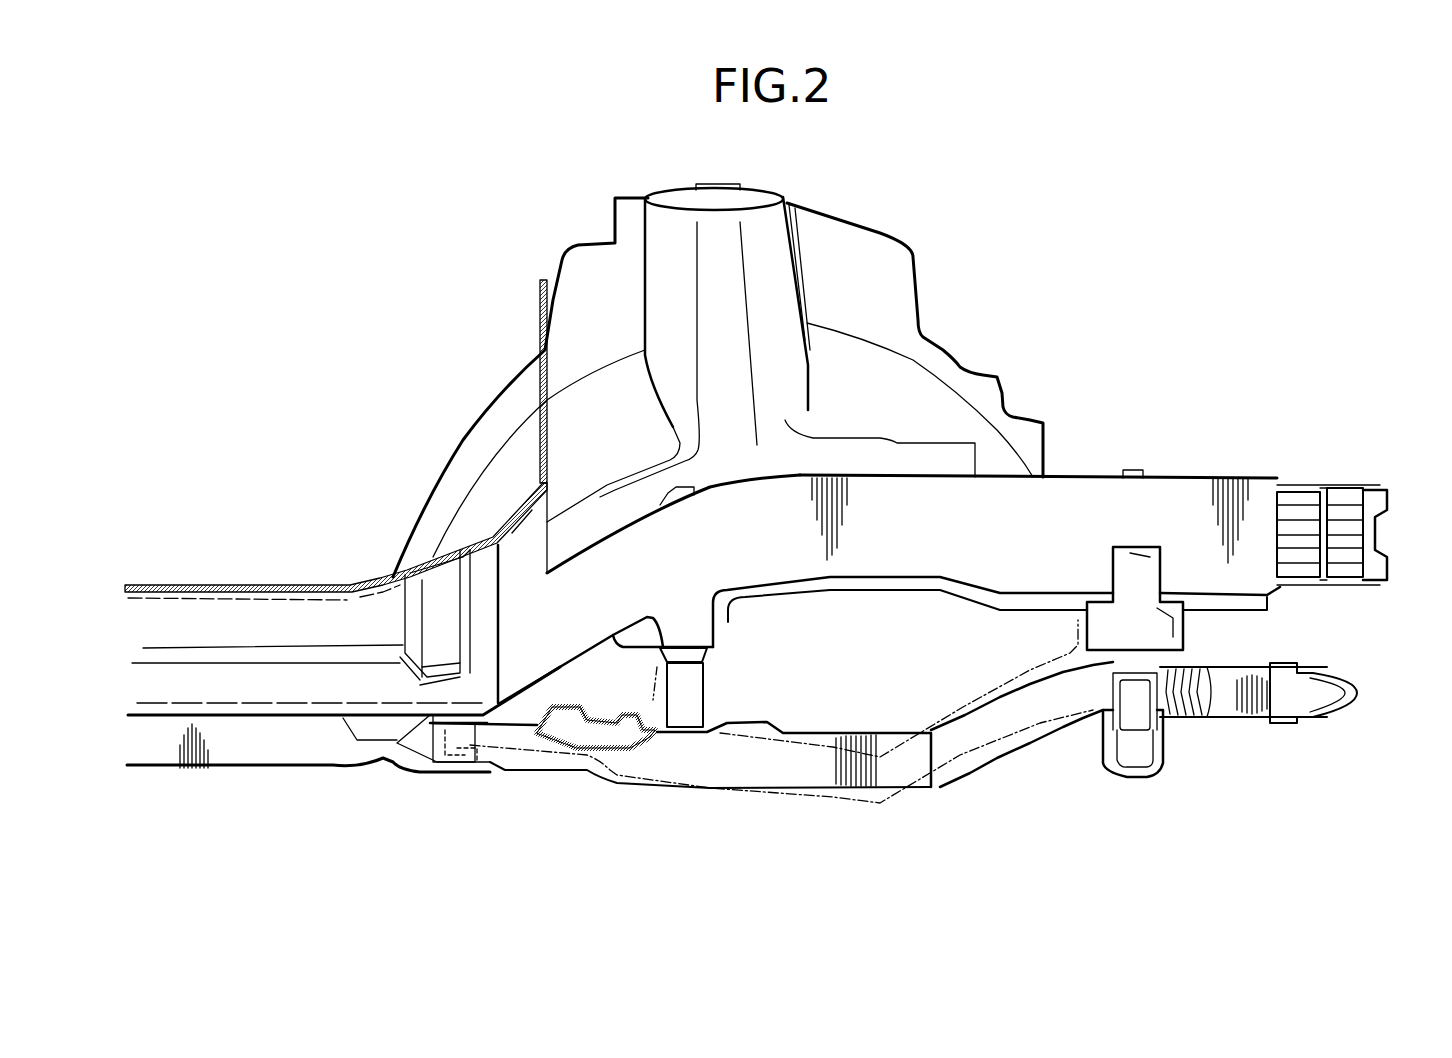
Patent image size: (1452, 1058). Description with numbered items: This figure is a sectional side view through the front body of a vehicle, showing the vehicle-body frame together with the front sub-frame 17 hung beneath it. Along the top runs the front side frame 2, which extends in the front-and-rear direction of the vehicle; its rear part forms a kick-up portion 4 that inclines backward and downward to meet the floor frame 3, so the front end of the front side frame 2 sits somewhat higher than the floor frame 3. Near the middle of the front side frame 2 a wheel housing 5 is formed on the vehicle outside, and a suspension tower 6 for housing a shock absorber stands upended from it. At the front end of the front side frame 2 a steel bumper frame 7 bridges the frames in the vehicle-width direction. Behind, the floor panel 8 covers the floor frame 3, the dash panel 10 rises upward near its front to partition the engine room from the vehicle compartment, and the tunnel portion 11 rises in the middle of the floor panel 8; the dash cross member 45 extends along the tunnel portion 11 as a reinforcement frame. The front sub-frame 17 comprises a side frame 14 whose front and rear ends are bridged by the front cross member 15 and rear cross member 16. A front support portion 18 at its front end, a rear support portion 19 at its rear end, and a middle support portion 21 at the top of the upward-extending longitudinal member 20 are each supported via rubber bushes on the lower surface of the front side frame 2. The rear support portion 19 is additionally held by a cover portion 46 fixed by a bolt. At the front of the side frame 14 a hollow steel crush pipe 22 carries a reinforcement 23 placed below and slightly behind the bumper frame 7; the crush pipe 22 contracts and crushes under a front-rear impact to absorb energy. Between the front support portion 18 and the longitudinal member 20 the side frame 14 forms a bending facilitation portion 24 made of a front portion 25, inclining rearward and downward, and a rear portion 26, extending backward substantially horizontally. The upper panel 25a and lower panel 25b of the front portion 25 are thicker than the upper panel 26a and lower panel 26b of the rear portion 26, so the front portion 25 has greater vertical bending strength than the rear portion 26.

The front side frame 2 is at (1190, 477).
The floor frame 3 is at (287, 770).
The kick-up portion 4 is at (557, 597).
The wheel housing 5 is at (915, 373).
The suspension tower 6 is at (800, 282).
The bumper frame 7 is at (1370, 540).
The floor panel 8 is at (237, 717).
The dash panel 10 is at (540, 397).
The tunnel portion 11 is at (303, 585).
The side frame 14 is at (673, 790).
The front cross member 15 is at (1167, 743).
The rear cross member 16 is at (600, 768).
The front sub-frame 17 is at (1067, 737).
The front support portion 18 is at (1202, 647).
The rear support portion 19 is at (463, 772).
The longitudinal member 20 is at (728, 735).
The middle support portion 21 is at (720, 672).
The crush pipe 22 is at (1243, 713).
The reinforcement 23 is at (1340, 707).
The bending facilitation portion 24 is at (915, 690).
The front portion 25 is at (1021, 738).
The upper panel 25a is at (975, 708).
The lower panel 25b is at (980, 773).
The rear portion 26 is at (843, 737).
The upper panel 26a is at (810, 730).
The lower panel 26b is at (867, 807).
The dash cross member 45 is at (435, 582).
The cover portion 46 is at (420, 772).